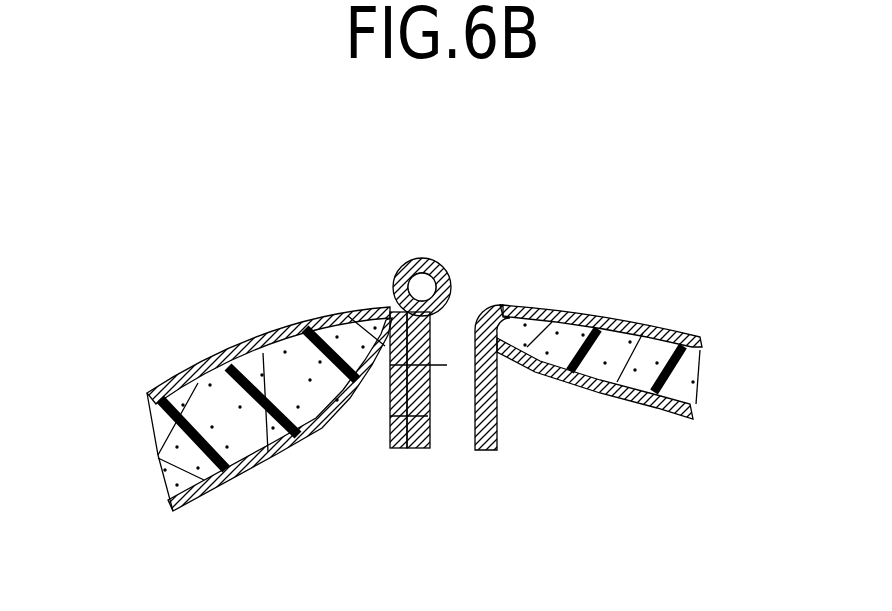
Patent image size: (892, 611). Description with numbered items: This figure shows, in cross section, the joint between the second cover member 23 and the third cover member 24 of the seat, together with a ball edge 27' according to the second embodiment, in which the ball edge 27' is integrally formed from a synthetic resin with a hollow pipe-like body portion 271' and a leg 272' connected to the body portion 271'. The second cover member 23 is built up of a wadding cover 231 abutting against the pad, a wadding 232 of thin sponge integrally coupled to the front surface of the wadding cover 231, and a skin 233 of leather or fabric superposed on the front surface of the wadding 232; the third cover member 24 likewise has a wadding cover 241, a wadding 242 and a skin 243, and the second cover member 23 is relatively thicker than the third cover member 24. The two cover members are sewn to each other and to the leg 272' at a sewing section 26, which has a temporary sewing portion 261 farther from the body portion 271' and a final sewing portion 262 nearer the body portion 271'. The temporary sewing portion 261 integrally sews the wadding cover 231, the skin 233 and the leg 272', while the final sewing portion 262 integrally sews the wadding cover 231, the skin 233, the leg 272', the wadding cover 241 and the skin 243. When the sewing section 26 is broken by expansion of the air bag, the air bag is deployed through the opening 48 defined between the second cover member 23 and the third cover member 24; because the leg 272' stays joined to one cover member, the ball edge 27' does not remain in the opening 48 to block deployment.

The second cover member 23 is at (233, 408).
The wadding cover 231 is at (206, 498).
The wadding 232 is at (124, 452).
The skin 233 is at (278, 327).
The third cover member 24 is at (648, 349).
The wadding cover 241 is at (663, 412).
The wadding 242 is at (705, 375).
The skin 243 is at (681, 330).
The sewing section 26 is at (426, 472).
The temporary sewing portion 261 is at (392, 416).
The final sewing portion 262 is at (447, 366).
The ball edge 27' is at (402, 332).
The body portion 271' is at (409, 250).
The leg 272' is at (343, 409).
The opening 48 is at (457, 330).